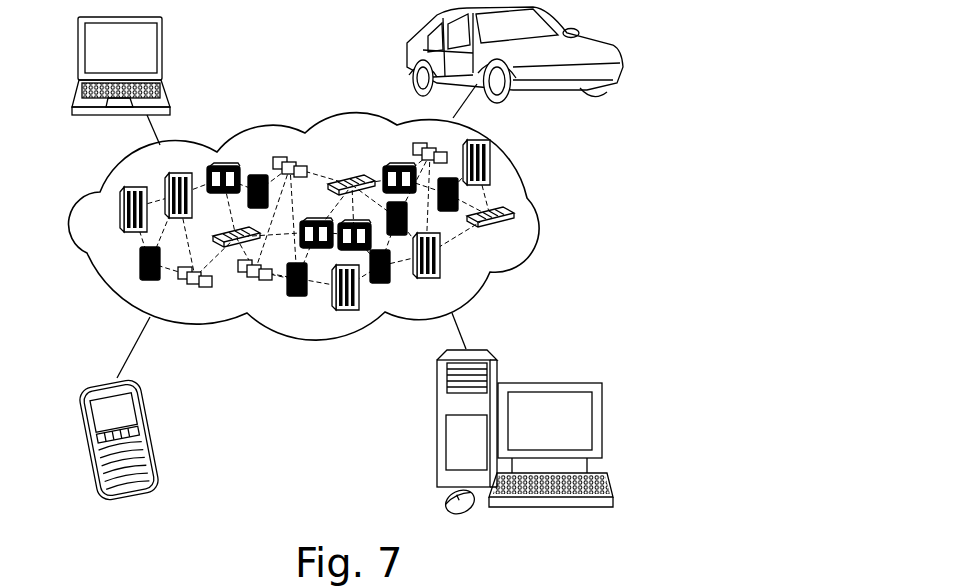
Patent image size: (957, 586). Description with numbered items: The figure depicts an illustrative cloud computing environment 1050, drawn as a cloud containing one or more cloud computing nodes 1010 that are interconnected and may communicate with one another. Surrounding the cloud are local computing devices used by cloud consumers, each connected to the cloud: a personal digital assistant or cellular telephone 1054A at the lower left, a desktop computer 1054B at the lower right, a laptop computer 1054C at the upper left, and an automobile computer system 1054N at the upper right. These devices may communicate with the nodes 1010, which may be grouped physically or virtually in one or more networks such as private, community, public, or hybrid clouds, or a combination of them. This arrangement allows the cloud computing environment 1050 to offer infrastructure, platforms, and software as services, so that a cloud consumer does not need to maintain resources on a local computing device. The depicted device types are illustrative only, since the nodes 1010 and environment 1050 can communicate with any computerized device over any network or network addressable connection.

The laptop computer 1054C is at (163, 38).
The automobile computer system 1054N is at (408, 58).
The cloud computing environment 1050 is at (533, 173).
The cloud computing nodes 1010 is at (527, 237).
The personal digital assistant or cellular telephone 1054A is at (158, 452).
The desktop computer 1054B is at (585, 383).